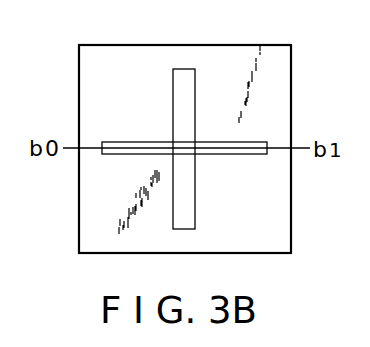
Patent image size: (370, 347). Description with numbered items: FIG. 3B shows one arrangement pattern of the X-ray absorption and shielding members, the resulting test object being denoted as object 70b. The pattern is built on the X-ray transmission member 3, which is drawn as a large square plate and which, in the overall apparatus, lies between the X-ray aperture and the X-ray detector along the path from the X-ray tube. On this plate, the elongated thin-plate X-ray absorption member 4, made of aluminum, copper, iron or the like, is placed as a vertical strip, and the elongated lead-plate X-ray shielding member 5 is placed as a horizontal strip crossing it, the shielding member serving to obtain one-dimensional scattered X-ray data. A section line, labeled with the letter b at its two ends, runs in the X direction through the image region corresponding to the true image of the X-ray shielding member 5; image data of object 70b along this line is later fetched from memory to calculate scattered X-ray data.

The X-ray transmission member 3 is at (292, 70).
The X-ray absorption member 4 is at (186, 76).
The X-ray shielding member 5 is at (266, 142).
The object 70b is at (170, 116).